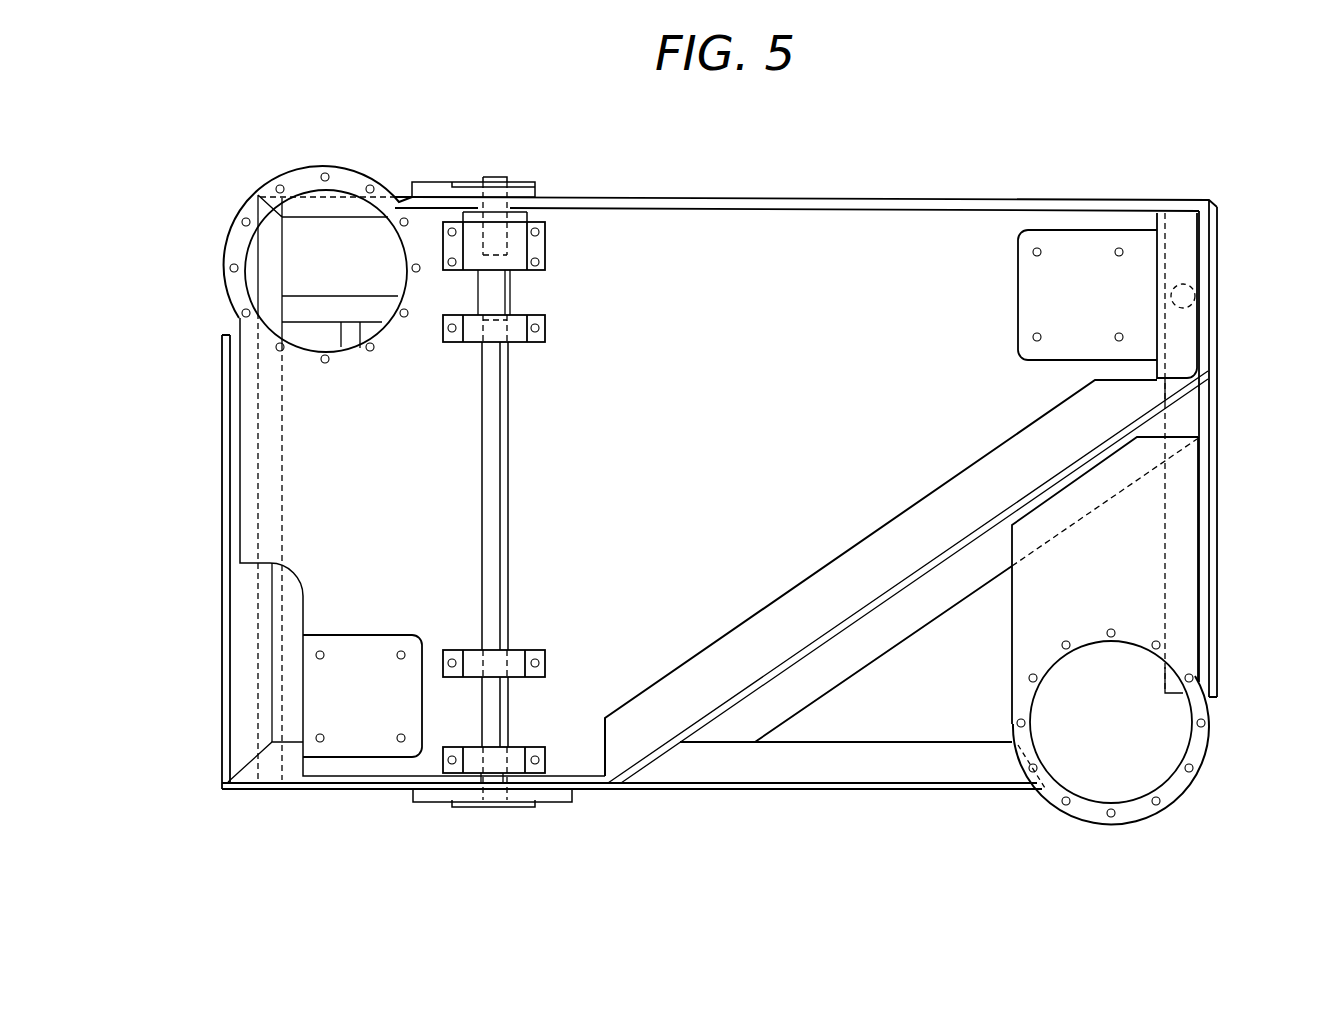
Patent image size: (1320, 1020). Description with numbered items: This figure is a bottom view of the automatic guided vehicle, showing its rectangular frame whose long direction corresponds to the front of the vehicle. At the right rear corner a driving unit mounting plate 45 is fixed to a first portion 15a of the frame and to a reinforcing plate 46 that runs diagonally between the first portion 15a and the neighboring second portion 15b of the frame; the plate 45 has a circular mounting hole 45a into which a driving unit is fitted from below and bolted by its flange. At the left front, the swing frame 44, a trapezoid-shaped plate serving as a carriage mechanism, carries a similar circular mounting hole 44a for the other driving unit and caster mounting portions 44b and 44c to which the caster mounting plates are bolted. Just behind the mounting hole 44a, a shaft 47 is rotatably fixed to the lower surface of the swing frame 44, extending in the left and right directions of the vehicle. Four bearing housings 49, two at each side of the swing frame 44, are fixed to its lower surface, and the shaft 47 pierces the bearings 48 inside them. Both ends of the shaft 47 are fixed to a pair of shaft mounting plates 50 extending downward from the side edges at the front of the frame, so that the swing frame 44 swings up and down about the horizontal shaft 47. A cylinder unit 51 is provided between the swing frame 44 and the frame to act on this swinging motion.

The first portion of the frame 15a is at (930, 790).
The second portion of the frame 15b is at (1217, 495).
The swing frame 44 is at (720, 207).
The mounting hole 44a is at (340, 186).
The caster mounting portion 44b is at (352, 757).
The caster mounting portion 44c is at (1065, 238).
The driving unit mounting plate 45 is at (1192, 603).
The mounting hole 45a is at (1080, 797).
The reinforcing plate 46 is at (940, 607).
The shaft 47 is at (500, 495).
The bearing 48 is at (517, 268).
The bearing housing 49 is at (542, 245).
The shaft mounting plate 50 is at (470, 178).
The cylinder unit 51 is at (1195, 292).